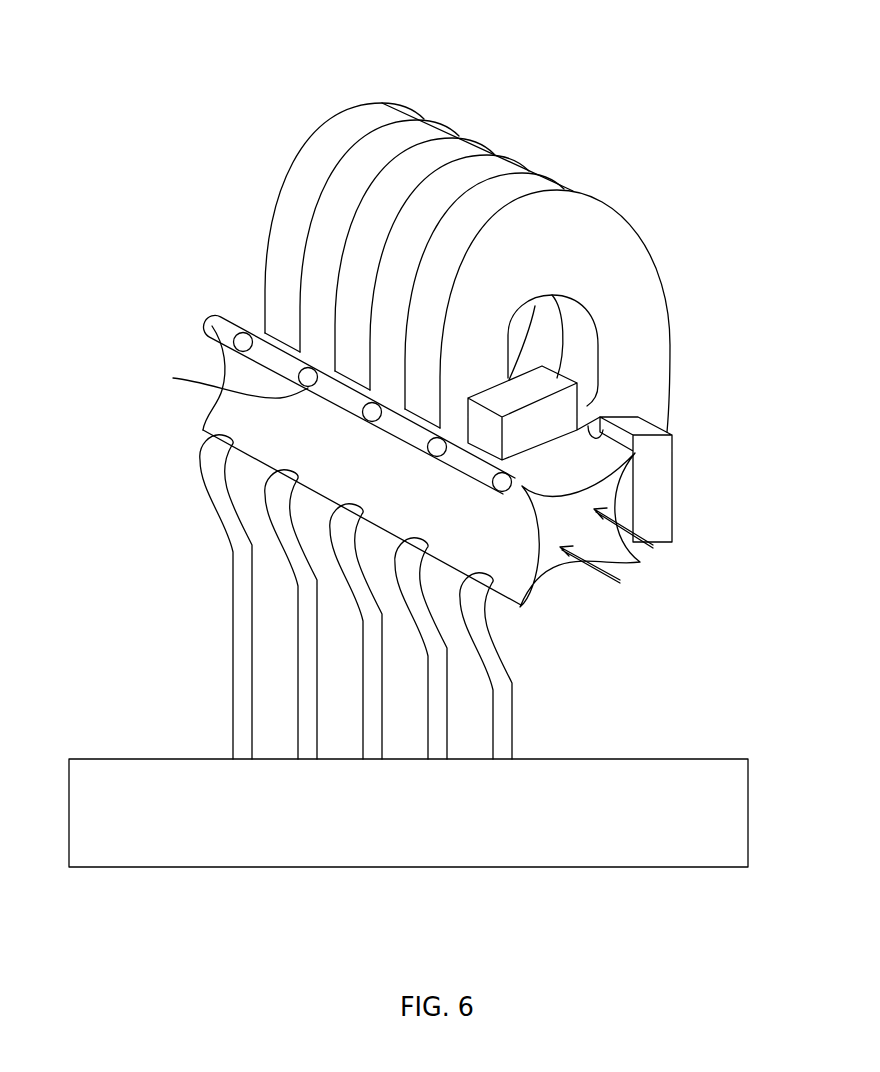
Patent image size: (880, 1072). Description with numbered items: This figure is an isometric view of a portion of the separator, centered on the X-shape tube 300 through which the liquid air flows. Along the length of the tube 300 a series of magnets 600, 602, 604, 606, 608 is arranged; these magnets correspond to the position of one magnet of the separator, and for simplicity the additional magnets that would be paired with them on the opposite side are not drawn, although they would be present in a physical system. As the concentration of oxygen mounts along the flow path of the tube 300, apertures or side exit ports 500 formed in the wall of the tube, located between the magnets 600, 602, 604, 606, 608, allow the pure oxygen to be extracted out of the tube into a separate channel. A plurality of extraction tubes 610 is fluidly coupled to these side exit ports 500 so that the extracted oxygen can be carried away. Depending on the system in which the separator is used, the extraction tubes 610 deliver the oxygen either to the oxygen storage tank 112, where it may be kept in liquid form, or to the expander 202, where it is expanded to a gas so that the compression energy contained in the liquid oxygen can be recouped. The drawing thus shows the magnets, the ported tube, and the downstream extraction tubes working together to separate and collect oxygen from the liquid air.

The magnet 608 is at (392, 102).
The magnet 606 is at (490, 147).
The magnet 604 is at (570, 190).
The magnet 602 is at (575, 379).
The magnet 600 is at (673, 455).
The tube 300 is at (204, 318).
The side exit ports 500 is at (230, 363).
The extraction tubes 610 is at (233, 647).
The oxygen storage tank 112 is at (390, 770).
The expander 202 is at (130, 759).